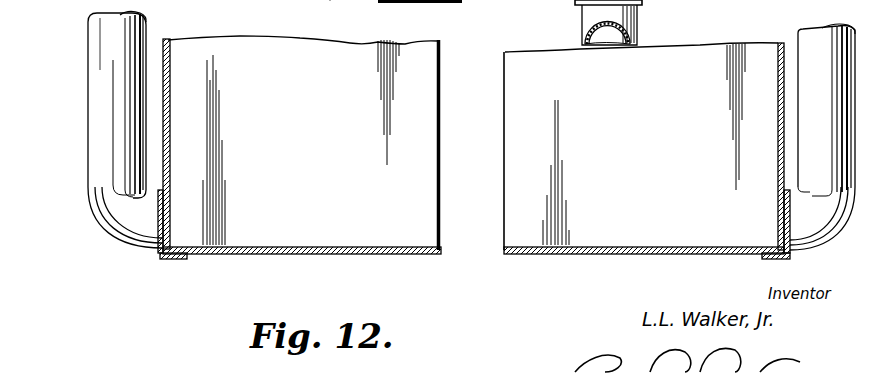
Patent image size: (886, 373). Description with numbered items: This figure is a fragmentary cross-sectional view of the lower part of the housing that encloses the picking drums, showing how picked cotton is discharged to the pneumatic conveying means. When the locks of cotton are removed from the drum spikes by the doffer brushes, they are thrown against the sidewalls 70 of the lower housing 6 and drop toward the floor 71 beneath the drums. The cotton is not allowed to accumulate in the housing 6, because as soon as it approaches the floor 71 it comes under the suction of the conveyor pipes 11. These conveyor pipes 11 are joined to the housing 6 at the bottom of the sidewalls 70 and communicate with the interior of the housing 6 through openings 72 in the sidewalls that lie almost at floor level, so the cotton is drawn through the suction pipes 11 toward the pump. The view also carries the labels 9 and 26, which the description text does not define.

The lower housing 6 is at (250, 236).
The tank 9 is at (470, 225).
The conveyor pipes 11 is at (140, 30).
The pipe 26 is at (326, 5).
The sidewalls 70 is at (170, 88).
The floor 71 is at (318, 247).
The openings 72 is at (168, 210).